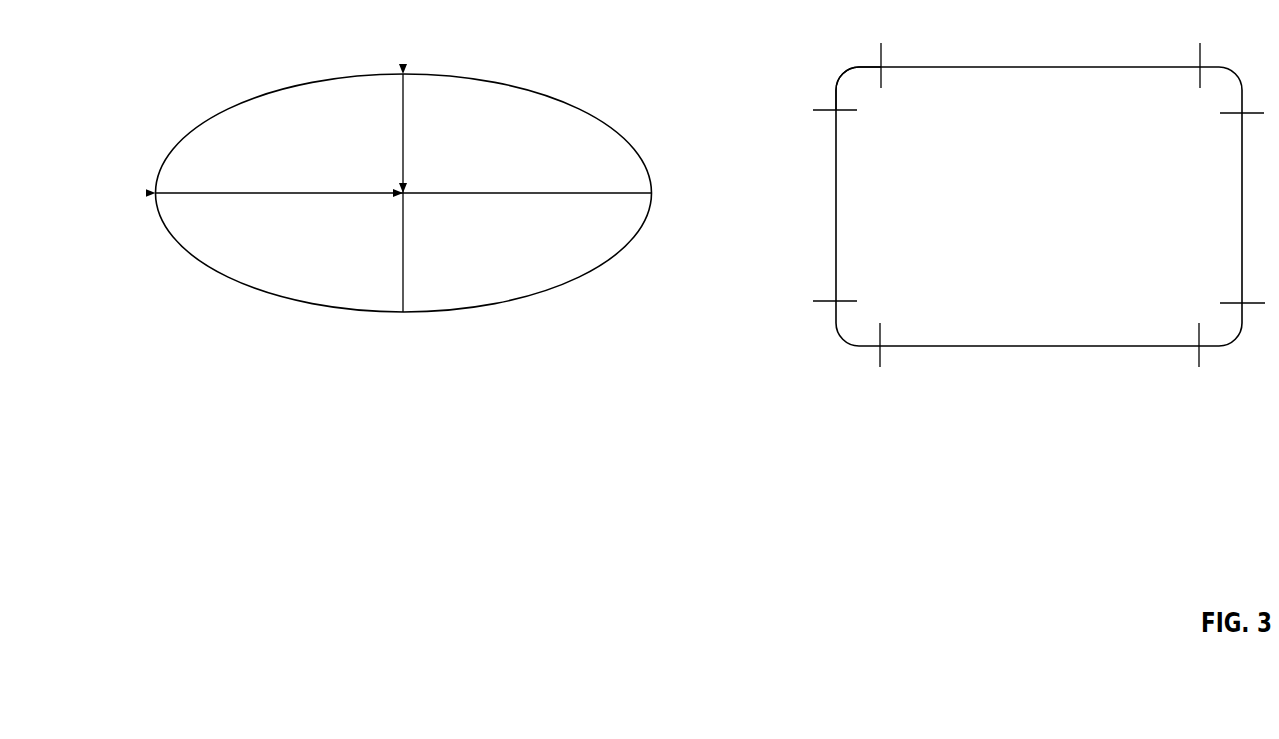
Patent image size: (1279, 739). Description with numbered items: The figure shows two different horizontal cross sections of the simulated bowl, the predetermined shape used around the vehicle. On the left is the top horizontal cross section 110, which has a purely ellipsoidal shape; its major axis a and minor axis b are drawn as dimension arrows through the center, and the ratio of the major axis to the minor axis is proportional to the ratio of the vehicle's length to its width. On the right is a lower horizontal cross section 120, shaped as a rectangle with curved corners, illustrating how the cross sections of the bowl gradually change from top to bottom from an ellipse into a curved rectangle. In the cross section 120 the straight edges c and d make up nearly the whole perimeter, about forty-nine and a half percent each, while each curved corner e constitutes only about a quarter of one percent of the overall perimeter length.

The horizontal cross section 110 is at (597, 118).
The horizontal cross section 120 is at (1232, 70).
The major axis a is at (404, 184).
The minor axis b is at (413, 193).
The straight edge c is at (1040, 205).
The straight edge d is at (1039, 206).
The curved corner e is at (853, 83).